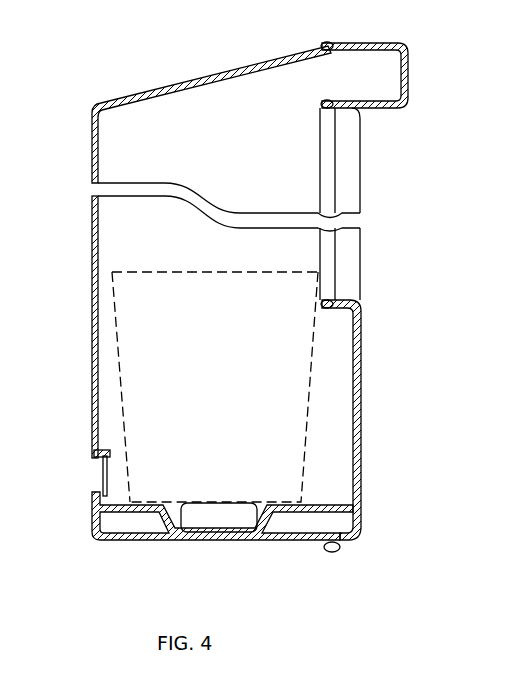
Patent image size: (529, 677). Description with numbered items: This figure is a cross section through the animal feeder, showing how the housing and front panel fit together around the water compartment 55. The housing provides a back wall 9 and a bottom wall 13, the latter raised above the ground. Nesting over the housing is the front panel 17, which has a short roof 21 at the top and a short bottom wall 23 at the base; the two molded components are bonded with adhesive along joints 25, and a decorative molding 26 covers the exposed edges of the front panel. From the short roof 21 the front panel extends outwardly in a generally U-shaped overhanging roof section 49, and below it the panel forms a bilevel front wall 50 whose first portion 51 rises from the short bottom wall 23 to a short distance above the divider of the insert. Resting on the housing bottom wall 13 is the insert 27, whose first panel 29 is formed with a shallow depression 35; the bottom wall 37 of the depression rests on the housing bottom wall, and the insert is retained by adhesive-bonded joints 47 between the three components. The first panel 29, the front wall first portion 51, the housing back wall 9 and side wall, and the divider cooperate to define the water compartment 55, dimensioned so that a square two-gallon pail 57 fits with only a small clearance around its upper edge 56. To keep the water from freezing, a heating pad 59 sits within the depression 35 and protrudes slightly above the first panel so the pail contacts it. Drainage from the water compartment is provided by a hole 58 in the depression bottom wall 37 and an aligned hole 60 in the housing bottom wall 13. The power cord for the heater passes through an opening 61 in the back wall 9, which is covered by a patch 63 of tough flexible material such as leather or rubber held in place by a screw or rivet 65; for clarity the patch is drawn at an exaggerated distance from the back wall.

The back wall 9 is at (92, 294).
The bottom wall 13 is at (120, 542).
The front panel 17 is at (362, 358).
The short roof 21 is at (378, 44).
The short bottom wall 23 is at (345, 540).
The joints 25 is at (355, 52).
The decorative molding 26 is at (322, 44).
The insert 27 is at (137, 514).
The first panel 29 is at (286, 508).
The shallow depression 35 is at (246, 537).
The bottom wall 37 is at (190, 538).
The joints 47 is at (353, 504).
The overhanging roof section 49 is at (408, 78).
The bilevel front wall 50 is at (363, 440).
The first portion 51 is at (363, 398).
The water compartment 55 is at (198, 390).
The upper edge 56 is at (285, 272).
The pail 57 is at (151, 273).
The hole 58 is at (220, 534).
The heating pad 59 is at (218, 515).
The hole 60 is at (215, 538).
The opening 61 is at (95, 492).
The patch 63 is at (103, 470).
The screw or rivet 65 is at (109, 450).